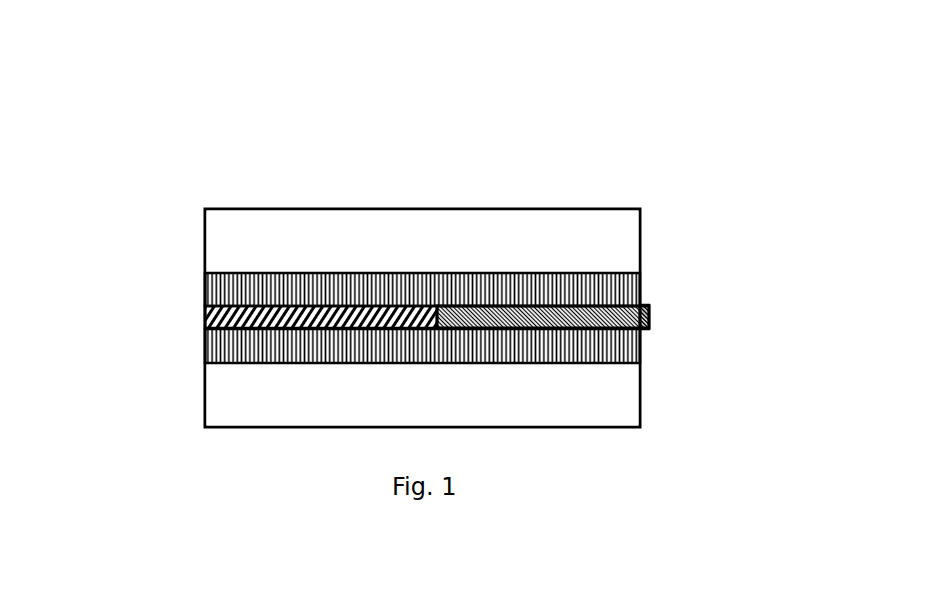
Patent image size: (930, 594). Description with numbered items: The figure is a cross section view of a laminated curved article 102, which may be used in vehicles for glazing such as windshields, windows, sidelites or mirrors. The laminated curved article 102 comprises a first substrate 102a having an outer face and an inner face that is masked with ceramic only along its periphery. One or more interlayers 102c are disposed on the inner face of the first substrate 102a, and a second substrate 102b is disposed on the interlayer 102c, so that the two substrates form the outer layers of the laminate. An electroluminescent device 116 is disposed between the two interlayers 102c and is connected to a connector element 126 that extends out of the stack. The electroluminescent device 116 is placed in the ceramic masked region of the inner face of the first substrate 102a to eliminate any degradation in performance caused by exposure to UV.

The laminated curved article 102 is at (435, 182).
The first substrate 102a is at (645, 228).
The second substrate 102b is at (637, 405).
The interlayer 102c is at (205, 280).
The electroluminescent device 116 is at (205, 320).
The connector element 126 is at (649, 315).